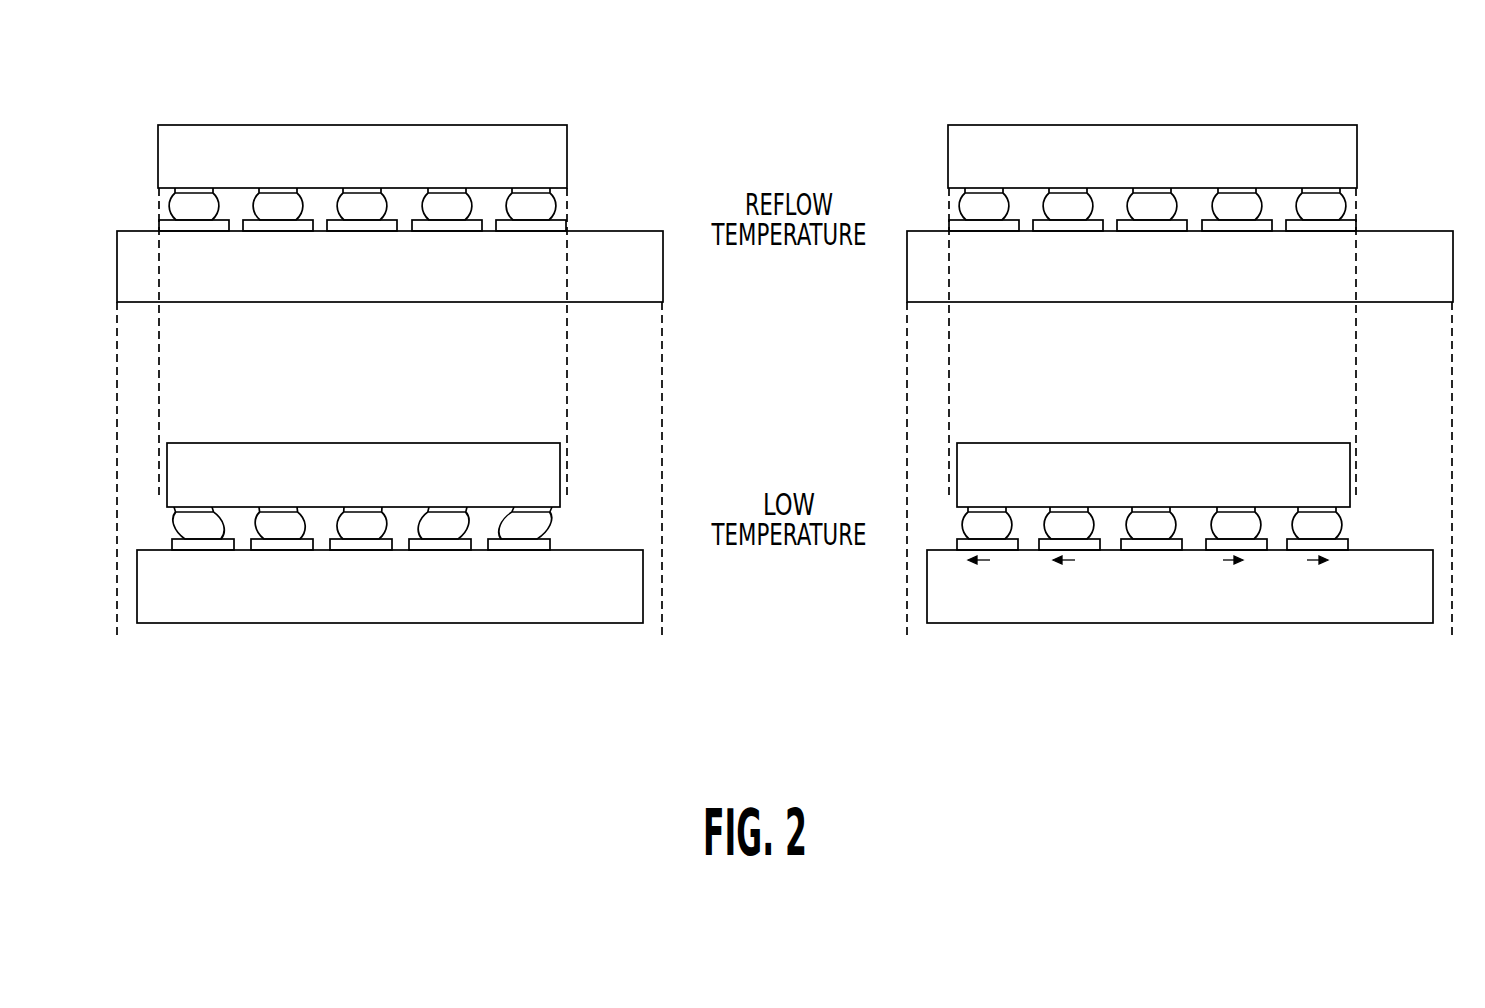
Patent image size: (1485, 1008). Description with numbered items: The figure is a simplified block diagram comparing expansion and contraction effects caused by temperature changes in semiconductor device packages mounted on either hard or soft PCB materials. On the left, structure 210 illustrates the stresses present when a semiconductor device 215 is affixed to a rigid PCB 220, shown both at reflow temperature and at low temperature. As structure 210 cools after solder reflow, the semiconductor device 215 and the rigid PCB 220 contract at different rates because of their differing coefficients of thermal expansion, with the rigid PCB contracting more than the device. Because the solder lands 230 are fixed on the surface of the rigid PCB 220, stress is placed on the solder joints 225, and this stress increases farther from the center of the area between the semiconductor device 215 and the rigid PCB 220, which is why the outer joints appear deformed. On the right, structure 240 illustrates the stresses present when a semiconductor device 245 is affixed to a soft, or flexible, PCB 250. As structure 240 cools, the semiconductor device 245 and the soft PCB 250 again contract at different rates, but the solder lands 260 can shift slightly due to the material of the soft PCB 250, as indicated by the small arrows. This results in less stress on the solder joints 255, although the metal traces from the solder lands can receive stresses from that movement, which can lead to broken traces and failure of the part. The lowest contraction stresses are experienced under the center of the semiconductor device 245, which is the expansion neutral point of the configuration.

The structure 210 is at (351, 686).
The semiconductor device 215 is at (527, 125).
The rigid PCB 220 is at (283, 303).
The solder joints 225 is at (532, 527).
The solder lands 230 is at (550, 545).
The structure 240 is at (1141, 686).
The semiconductor device 245 is at (1317, 125).
The soft PCB 250 is at (1073, 303).
The solder joints 255 is at (1322, 527).
The solder lands 260 is at (1347, 545).